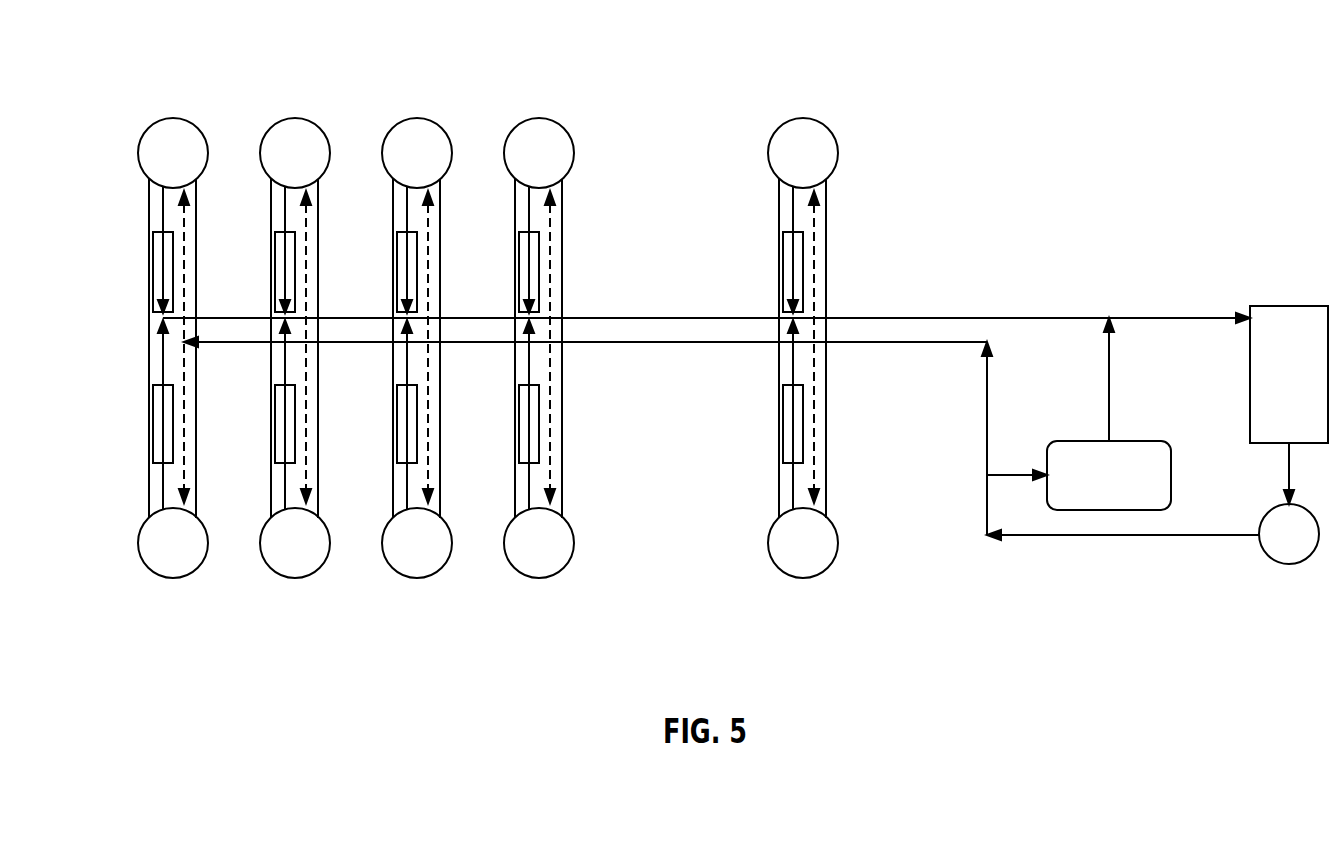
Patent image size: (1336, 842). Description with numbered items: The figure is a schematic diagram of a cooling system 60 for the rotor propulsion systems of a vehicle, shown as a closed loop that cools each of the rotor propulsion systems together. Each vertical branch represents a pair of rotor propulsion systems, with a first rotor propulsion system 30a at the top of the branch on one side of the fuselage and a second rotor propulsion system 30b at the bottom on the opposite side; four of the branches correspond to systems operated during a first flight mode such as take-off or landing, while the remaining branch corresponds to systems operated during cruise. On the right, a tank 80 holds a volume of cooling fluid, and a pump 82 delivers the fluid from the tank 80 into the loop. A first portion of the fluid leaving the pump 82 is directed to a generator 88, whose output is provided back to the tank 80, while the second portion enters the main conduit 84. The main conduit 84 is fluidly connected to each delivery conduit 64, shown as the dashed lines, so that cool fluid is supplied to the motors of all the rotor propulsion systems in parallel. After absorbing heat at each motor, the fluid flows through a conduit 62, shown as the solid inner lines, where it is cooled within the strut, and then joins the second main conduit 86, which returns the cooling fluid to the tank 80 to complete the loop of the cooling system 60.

The first rotor propulsion system 30a is at (178, 119).
The second rotor propulsion system 30b is at (170, 578).
The conduit 62 is at (162, 213).
The delivery conduit 64 is at (185, 232).
The second main conduit 86 is at (678, 316).
The main conduit 84 is at (632, 344).
The tank 80 is at (1289, 405).
The pump 82 is at (1289, 534).
The generator 88 is at (1109, 414).
The cooling system 60 is at (1247, 169).